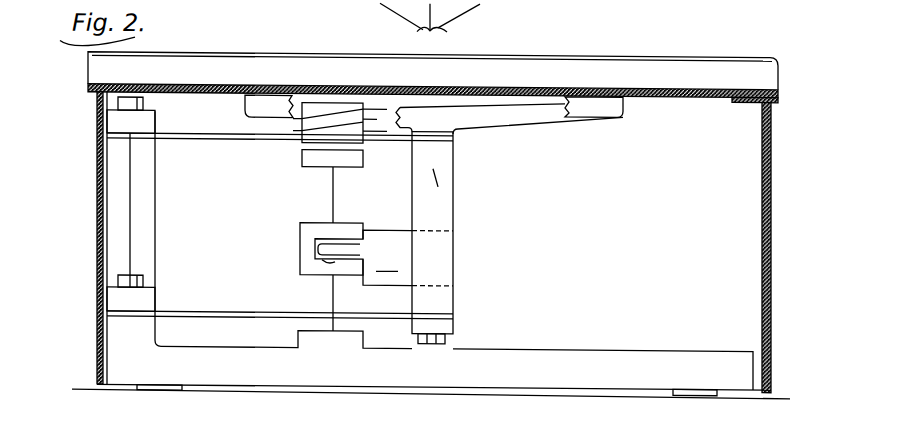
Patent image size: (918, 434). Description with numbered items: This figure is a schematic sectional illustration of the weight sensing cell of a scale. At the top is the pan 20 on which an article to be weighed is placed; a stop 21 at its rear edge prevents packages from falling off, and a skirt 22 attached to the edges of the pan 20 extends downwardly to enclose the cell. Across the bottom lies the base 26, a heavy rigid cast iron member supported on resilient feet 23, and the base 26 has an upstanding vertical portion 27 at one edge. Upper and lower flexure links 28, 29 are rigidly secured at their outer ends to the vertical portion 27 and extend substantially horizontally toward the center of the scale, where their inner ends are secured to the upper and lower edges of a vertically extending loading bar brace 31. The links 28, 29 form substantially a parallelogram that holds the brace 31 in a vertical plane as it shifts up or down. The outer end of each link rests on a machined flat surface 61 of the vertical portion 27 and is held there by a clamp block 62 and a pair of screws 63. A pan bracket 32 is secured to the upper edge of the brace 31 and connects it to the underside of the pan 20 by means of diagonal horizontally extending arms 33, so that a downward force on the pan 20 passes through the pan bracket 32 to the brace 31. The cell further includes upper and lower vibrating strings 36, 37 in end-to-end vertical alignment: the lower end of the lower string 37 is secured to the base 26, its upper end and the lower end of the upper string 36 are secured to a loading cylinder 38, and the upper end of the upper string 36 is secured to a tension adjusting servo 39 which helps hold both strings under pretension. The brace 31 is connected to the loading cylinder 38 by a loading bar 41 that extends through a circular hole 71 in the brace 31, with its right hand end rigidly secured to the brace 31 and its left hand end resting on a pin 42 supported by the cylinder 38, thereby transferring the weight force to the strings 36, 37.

The pan 20 is at (778, 90).
The stop 21 is at (677, 59).
The skirt 22 is at (771, 206).
The feet 23 is at (423, 25).
The base 26 is at (688, 312).
The vertical portion 27 is at (118, 207).
The upper flexure links 28 is at (230, 138).
The lower flexure links 29 is at (188, 309).
The loading bar brace 31 is at (443, 198).
The pan bracket 32 is at (557, 125).
The diagonal horizontally extending arms 33 is at (270, 100).
The upper vibrating member 36 is at (333, 187).
The lower vibrating member 37 is at (330, 289).
The loading cylinder 38 is at (300, 225).
The servo 39 is at (377, 67).
The loading bar 41 is at (387, 257).
The pin 42 is at (323, 261).
The flat surface 61 is at (143, 131).
The clamp block 62 is at (117, 115).
The screws 63 is at (117, 101).
The circular hole 71 is at (437, 283).